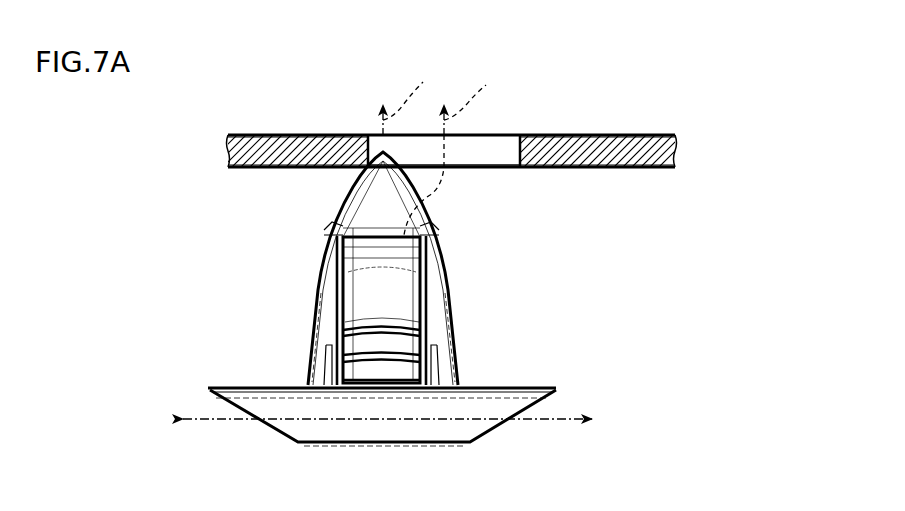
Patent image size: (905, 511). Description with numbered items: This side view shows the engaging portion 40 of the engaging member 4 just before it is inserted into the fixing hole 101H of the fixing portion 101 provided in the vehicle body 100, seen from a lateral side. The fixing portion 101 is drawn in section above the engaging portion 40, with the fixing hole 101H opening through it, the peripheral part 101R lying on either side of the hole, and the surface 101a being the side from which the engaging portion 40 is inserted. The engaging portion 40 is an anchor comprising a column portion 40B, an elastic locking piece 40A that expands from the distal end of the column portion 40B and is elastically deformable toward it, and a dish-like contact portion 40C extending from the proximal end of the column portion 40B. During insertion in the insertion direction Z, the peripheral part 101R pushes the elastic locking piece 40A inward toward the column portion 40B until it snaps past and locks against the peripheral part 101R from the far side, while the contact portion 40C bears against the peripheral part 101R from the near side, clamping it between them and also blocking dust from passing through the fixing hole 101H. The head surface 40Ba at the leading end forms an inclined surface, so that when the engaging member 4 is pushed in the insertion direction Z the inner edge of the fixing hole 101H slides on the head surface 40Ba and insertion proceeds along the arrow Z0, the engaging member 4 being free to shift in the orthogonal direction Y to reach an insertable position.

The engaging member 4 is at (395, 326).
The engaging portion 40 is at (393, 268).
The elastic locking piece 40A is at (365, 300).
The column portion 40B is at (435, 315).
The head surface 40Ba is at (357, 190).
The contact portion 40C is at (480, 427).
The vehicle body 100 is at (462, 94).
The fixing portion 101 is at (657, 130).
The fixing hole 101H is at (505, 142).
The peripheral part 101R is at (355, 137).
The surface 101a is at (632, 168).
The insertion direction Z is at (410, 103).
The arrow Z0 is at (460, 156).
The orthogonal direction Y is at (565, 414).